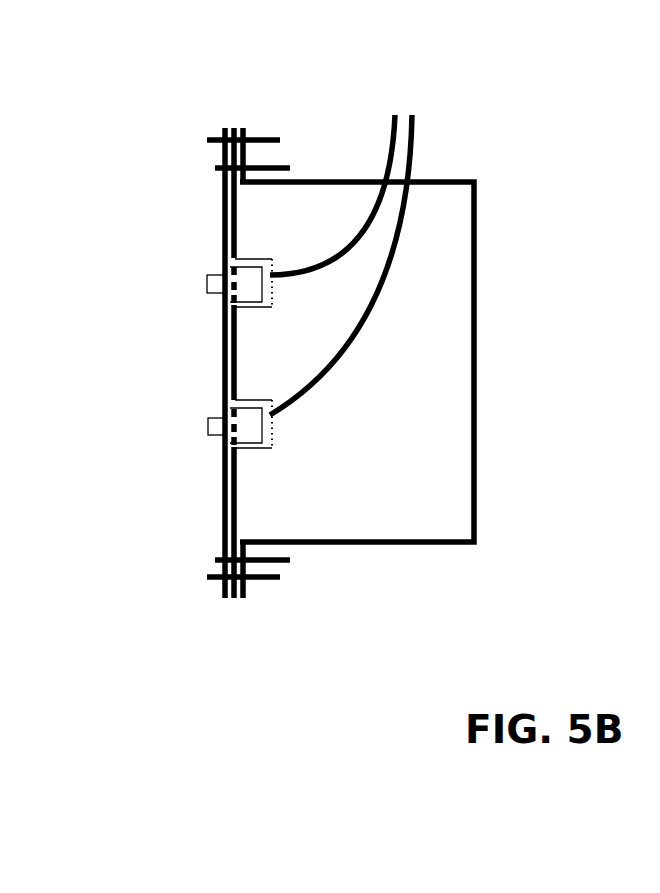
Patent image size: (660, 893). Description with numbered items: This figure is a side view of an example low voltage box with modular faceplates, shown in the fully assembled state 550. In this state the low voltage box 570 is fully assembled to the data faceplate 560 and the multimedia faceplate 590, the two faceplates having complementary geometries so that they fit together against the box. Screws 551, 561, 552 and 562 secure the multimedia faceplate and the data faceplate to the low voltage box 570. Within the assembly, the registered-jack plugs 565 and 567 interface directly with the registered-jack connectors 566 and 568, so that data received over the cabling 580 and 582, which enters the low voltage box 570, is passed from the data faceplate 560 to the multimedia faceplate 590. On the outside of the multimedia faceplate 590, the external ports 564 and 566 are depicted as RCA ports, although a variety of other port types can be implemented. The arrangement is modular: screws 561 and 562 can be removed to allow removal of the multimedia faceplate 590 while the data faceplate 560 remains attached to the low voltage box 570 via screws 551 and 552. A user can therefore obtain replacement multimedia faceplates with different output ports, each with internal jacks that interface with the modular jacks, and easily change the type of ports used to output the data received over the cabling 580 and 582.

The fully assembled configuration 550 is at (293, 74).
The screw 551 is at (262, 140).
The screw 552 is at (262, 580).
The data faceplate 560 is at (233, 128).
The screw 561 is at (278, 168).
The screw 562 is at (290, 562).
The external port 564 is at (207, 278).
The RJ-45 plug 565 is at (243, 307).
The RJ-45 connector / external port 566 is at (208, 420).
The RJ-45 plug 567 is at (243, 448).
The RJ-45 connector 568 is at (253, 259).
The low voltage box 570 is at (458, 182).
The cabling 580 is at (363, 238).
The cabling 582 is at (355, 345).
The multimedia faceplate 590 is at (223, 599).